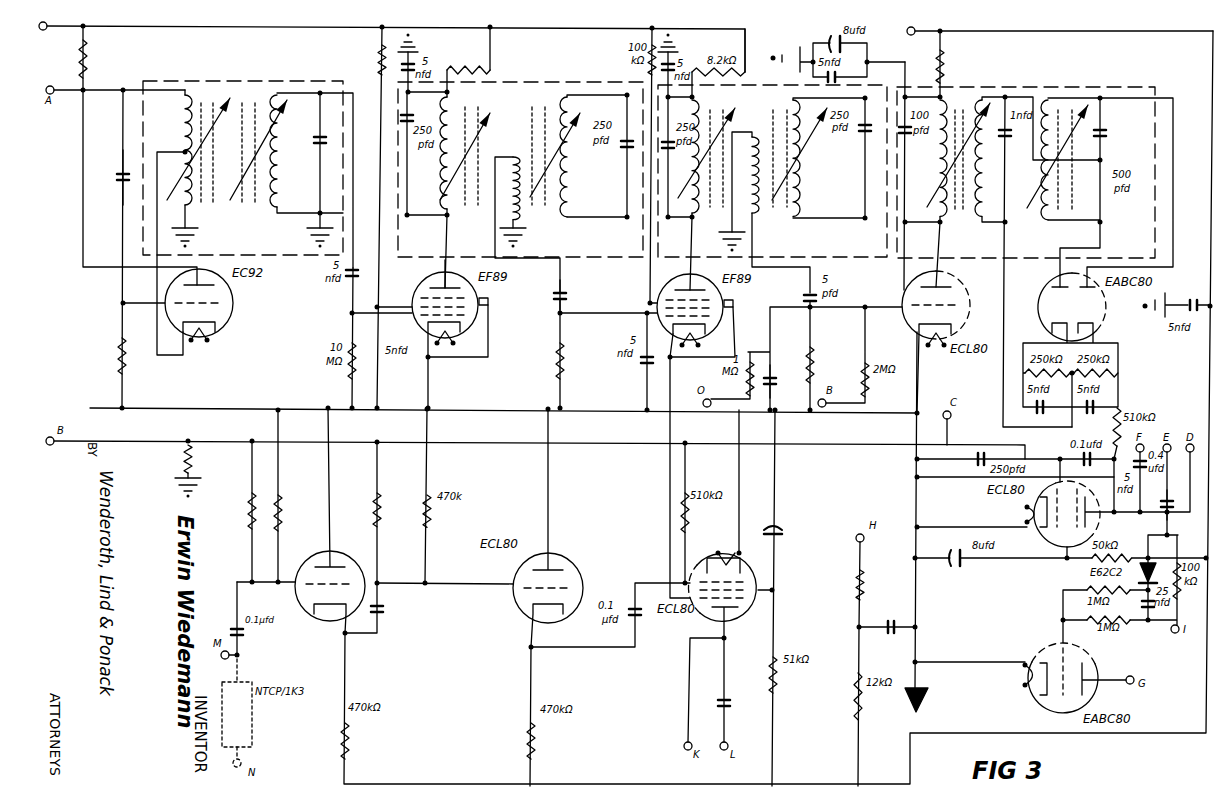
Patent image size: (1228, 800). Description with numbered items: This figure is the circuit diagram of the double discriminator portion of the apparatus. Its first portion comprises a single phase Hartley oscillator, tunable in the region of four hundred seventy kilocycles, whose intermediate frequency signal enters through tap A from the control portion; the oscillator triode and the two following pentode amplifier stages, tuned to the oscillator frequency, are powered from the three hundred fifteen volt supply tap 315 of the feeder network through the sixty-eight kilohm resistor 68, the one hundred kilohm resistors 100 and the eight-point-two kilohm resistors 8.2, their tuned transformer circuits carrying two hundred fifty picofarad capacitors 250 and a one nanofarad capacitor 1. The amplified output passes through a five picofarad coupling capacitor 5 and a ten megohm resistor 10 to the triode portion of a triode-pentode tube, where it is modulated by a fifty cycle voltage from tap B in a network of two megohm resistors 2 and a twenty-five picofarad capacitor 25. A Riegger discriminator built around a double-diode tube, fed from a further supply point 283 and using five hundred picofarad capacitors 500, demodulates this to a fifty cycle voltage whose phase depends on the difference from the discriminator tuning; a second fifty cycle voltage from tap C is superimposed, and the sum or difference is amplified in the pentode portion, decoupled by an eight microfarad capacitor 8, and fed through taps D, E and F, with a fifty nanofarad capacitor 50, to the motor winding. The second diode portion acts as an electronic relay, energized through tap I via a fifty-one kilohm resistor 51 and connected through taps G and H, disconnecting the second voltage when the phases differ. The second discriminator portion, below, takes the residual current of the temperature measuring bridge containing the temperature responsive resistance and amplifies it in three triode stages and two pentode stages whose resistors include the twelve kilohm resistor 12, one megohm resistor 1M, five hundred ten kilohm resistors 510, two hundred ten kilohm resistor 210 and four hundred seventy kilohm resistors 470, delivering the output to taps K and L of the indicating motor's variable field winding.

The 315 v. tap 315 is at (56, 45).
The 68 kohm resistor 68 is at (101, 59).
The 1 nfd capacitor 1 is at (114, 177).
The 250 pfd capacitor 250 is at (306, 153).
The 470 kohm resistor 470 is at (108, 356).
The 12 kohm resistor 12 is at (201, 471).
The 1 Mohm resistor 1M is at (234, 511).
The 510 kohm resistor 510 is at (297, 513).
The 210 kohm resistor 210 is at (394, 509).
The 8 ufd capacitor 8 is at (788, 526).
The 51 kohm resistor 51 is at (875, 585).
The 100 kohm resistor 100 is at (369, 57).
The 8.2 kohm resistor 8.2 is at (467, 64).
The control portion 5 is at (573, 293).
The 10 Mohm resistor 10 is at (576, 361).
The 2 Mohm resistor 2 is at (823, 362).
The 25 pfd capacitor 25 is at (781, 378).
The 283 V supply resistor 283 is at (982, 60).
The 500 pfd capacitor 500 is at (1114, 129).
The 50 nfd capacitor 50 is at (1174, 497).